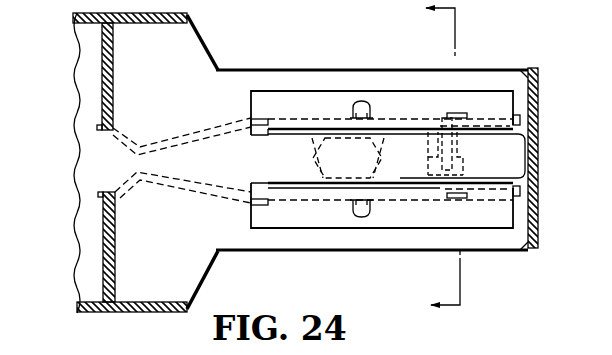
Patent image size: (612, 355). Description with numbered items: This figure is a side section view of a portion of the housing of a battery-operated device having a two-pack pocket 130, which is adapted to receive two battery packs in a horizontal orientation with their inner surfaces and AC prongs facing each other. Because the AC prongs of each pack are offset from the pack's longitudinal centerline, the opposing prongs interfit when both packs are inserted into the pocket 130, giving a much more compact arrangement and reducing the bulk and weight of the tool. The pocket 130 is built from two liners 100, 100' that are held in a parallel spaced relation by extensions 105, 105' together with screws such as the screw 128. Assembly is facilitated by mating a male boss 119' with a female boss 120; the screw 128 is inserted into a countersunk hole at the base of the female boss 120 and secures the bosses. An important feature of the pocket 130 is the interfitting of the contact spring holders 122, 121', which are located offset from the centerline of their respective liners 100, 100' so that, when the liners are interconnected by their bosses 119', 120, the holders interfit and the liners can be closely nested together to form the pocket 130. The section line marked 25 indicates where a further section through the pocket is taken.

The two-pack pocket 130 is at (496, 59).
The extension 105 is at (111, 71).
The extension 105' is at (111, 252).
The liner 100 is at (182, 126).
The liner 100' is at (183, 201).
The contact spring holder 122 is at (312, 140).
The contact spring holder 121' is at (315, 159).
The female boss 120 is at (428, 142).
The screw 128 is at (462, 146).
The male boss 119' is at (467, 169).
The section line 25- 25 is at (454, 158).